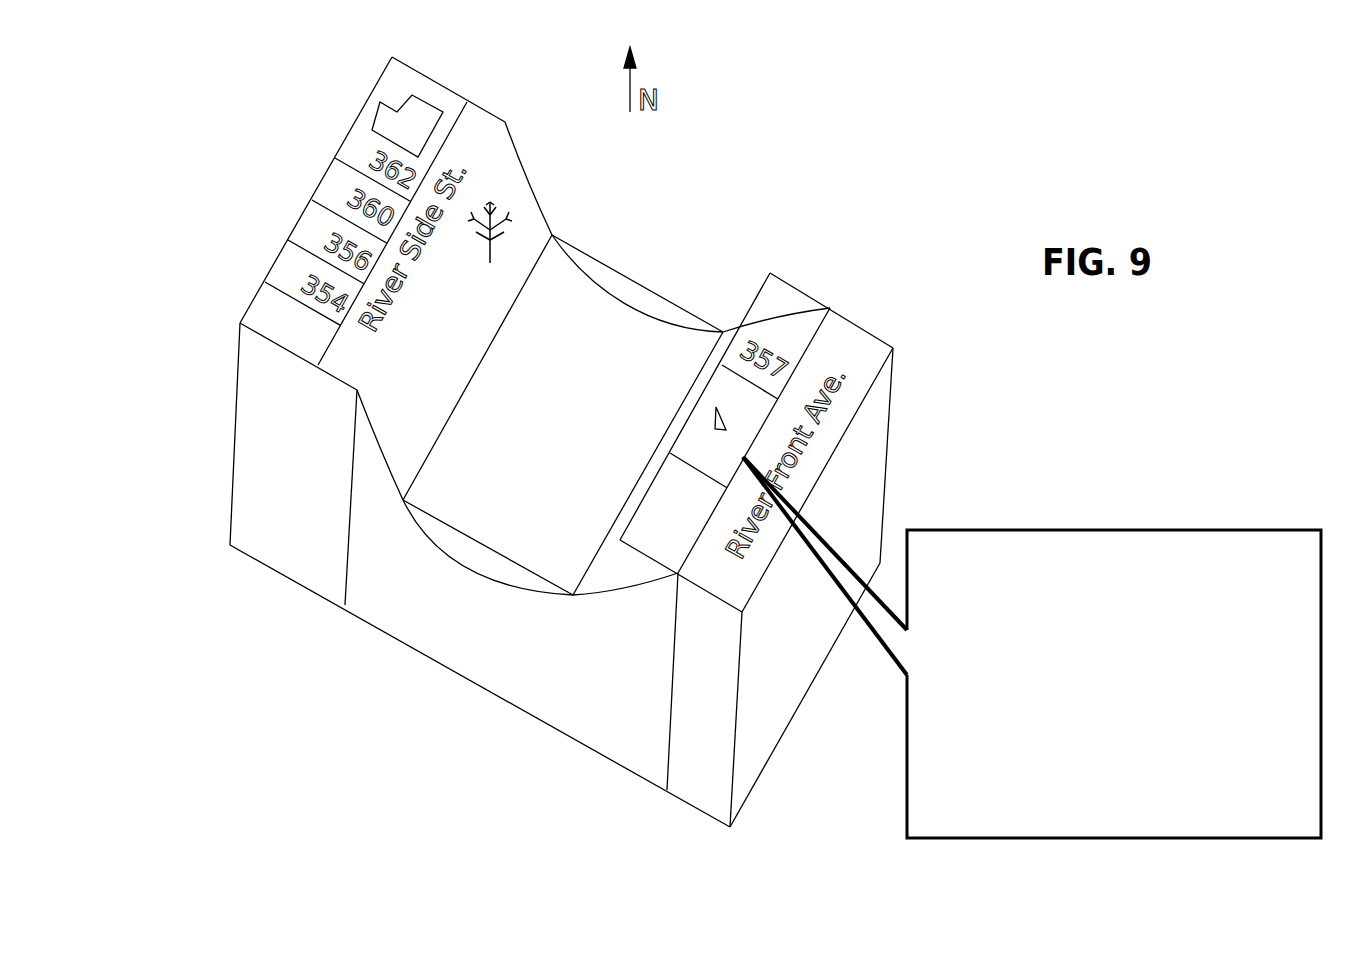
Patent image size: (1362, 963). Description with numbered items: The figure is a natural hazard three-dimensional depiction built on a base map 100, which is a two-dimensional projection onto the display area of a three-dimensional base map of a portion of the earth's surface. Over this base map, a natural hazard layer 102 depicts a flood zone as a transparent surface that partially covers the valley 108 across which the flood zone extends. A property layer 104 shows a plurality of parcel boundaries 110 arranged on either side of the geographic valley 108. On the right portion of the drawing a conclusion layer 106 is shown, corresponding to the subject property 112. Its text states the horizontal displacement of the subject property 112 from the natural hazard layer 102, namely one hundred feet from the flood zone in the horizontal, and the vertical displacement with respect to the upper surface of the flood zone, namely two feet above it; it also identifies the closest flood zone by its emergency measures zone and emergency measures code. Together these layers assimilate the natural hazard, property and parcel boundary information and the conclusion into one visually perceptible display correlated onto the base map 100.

The base map 100 is at (562, 680).
The natural hazard layer 102 is at (642, 285).
The property layer 104 is at (238, 315).
The conclusion layer 106 is at (1150, 529).
The valley 108 is at (443, 553).
The parcel boundaries 110 is at (312, 200).
The subject property 112 is at (722, 393).